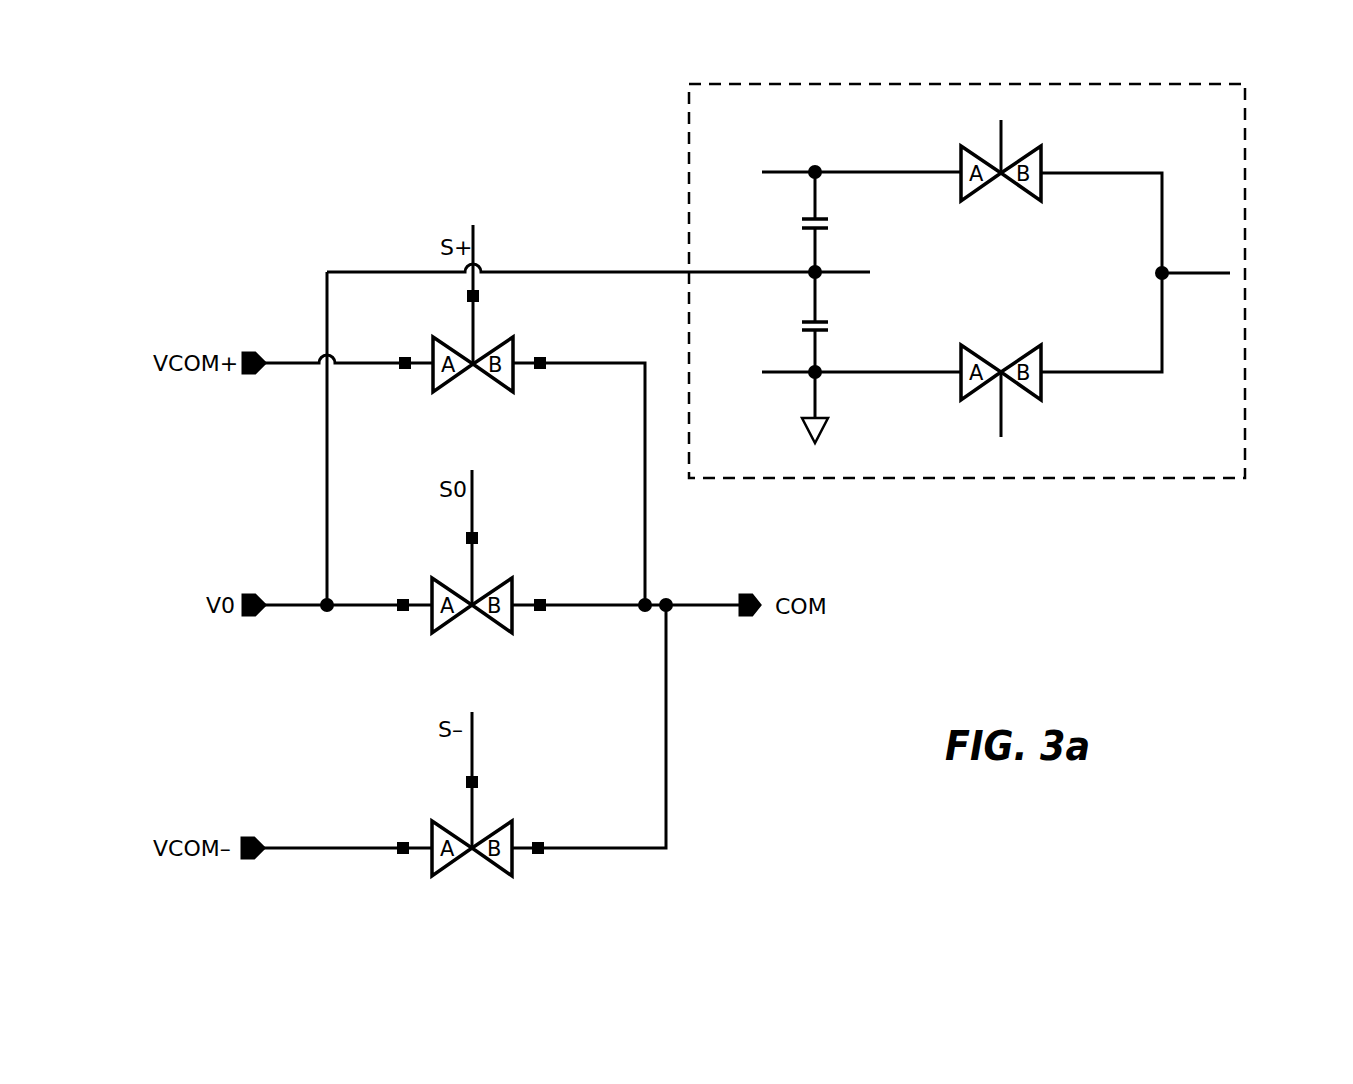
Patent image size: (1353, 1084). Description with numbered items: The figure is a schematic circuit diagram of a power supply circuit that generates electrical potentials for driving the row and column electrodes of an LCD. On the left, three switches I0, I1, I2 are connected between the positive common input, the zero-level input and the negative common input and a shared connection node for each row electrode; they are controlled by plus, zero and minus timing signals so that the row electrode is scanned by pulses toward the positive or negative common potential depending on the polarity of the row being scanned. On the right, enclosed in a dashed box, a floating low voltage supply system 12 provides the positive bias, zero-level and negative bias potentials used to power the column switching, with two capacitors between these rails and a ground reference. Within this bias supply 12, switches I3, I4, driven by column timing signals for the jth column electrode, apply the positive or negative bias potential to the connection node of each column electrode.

The floating low voltage supply system 12 is at (967, 301).
The switch I0 is at (474, 363).
The switch I1 is at (473, 605).
The switch I2 is at (473, 848).
The switch I3 is at (1001, 183).
The switch I4 is at (1001, 368).